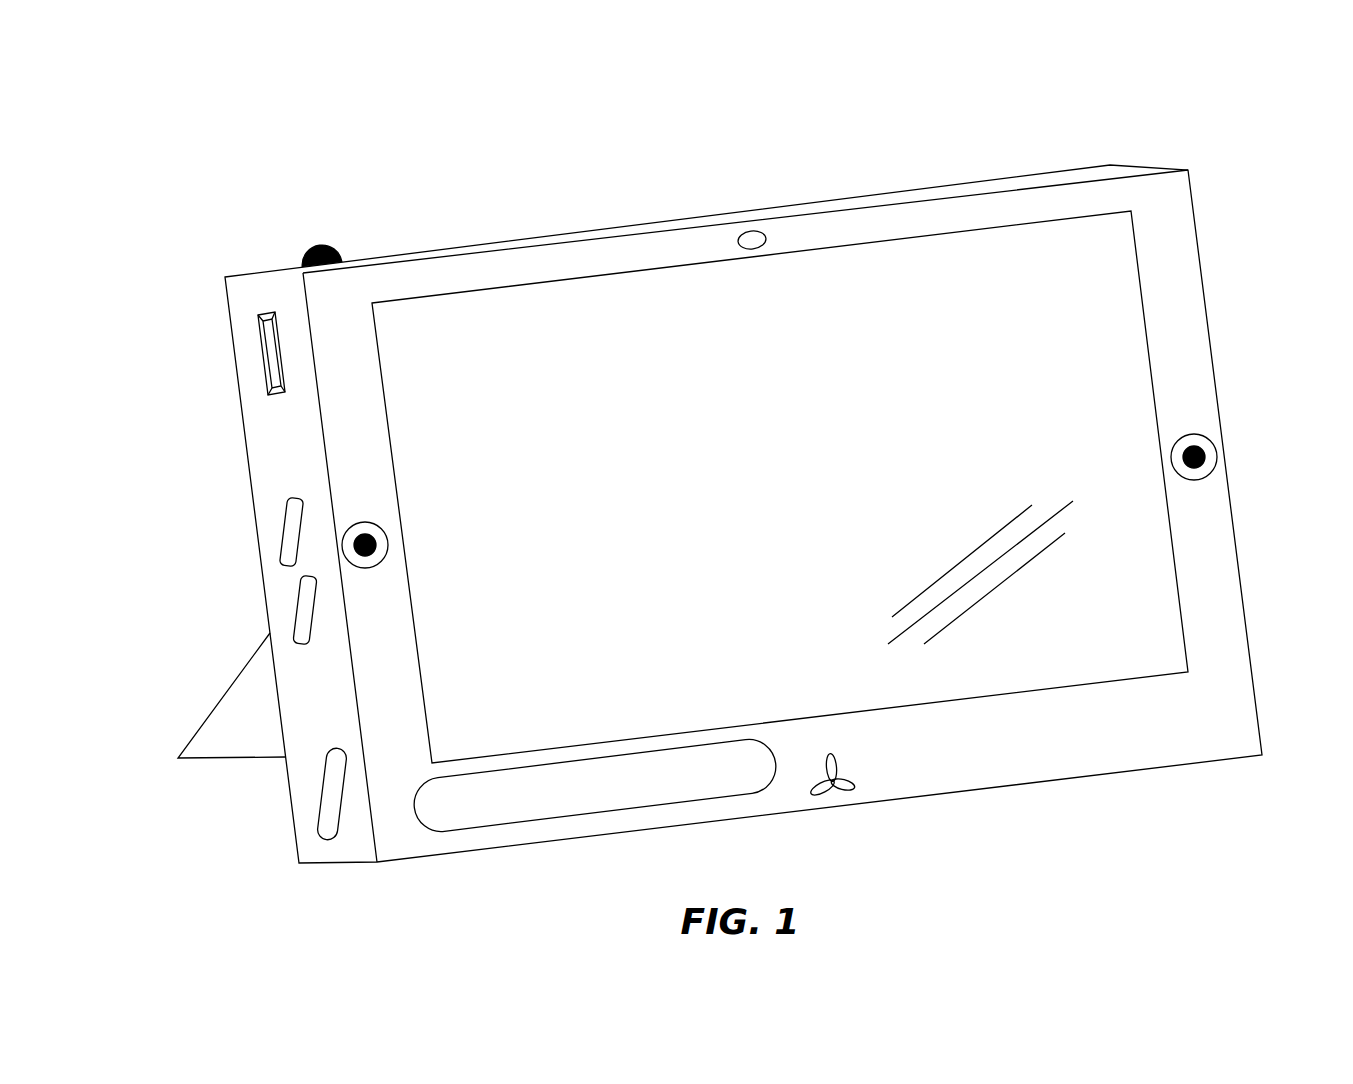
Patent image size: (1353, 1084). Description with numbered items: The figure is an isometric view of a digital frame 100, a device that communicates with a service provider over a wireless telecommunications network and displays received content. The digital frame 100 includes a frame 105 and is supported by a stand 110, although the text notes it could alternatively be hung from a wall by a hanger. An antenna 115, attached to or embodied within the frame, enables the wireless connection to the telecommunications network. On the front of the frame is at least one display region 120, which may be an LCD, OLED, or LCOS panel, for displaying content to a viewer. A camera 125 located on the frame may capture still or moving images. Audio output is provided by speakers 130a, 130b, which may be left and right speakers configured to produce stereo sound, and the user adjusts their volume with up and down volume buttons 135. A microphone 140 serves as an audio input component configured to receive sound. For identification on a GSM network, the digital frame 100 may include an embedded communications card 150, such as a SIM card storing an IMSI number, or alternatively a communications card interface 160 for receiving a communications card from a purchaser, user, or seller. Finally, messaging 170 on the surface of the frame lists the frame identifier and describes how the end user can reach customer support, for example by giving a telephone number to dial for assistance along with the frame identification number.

The digital frame 100 is at (236, 178).
The frame 105 is at (549, 259).
The stand 110 is at (234, 713).
The antenna 115 is at (325, 245).
The display region 120 is at (1060, 688).
The camera 125 is at (752, 240).
The speaker 130a is at (376, 545).
The speaker 130b is at (1205, 457).
The volume buttons 135 is at (303, 603).
The microphone 140 is at (838, 787).
The embedded communications card 150 is at (323, 804).
The communications card interface 160 is at (272, 354).
The messaging 170 is at (470, 822).